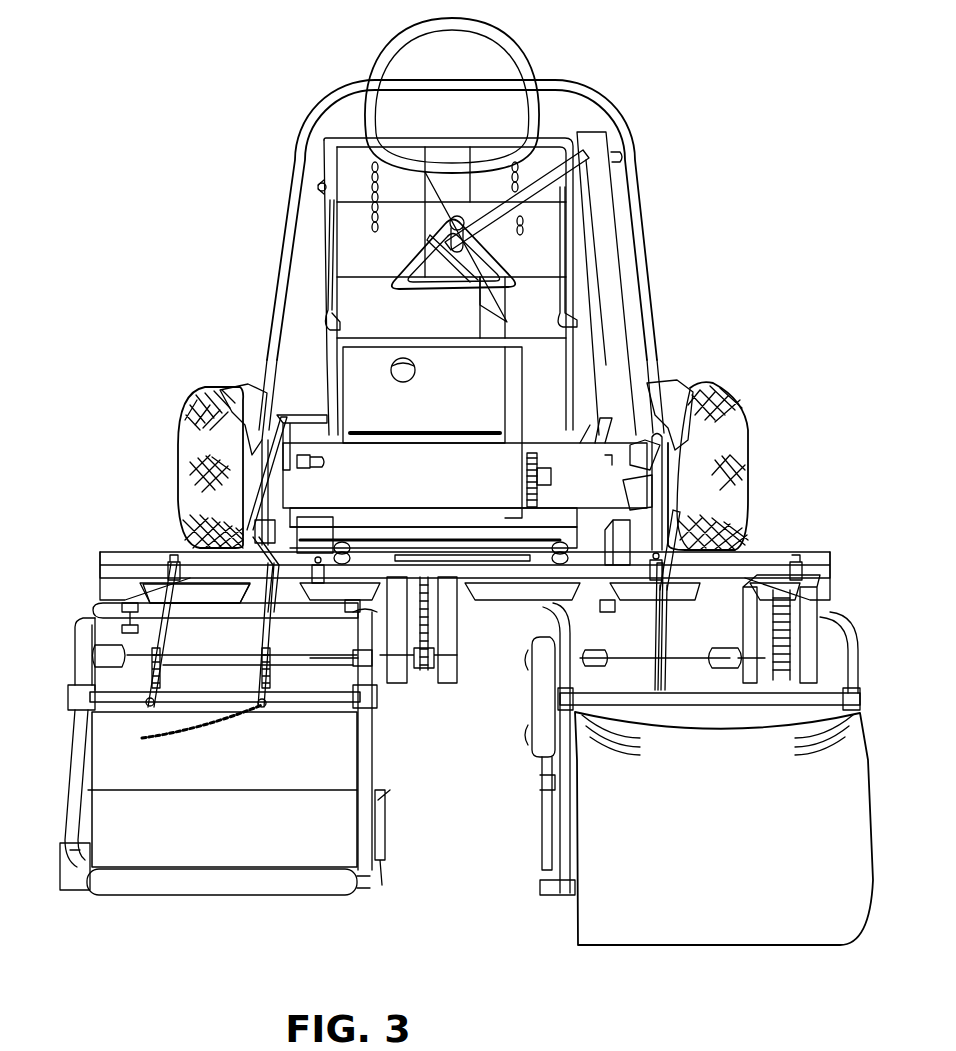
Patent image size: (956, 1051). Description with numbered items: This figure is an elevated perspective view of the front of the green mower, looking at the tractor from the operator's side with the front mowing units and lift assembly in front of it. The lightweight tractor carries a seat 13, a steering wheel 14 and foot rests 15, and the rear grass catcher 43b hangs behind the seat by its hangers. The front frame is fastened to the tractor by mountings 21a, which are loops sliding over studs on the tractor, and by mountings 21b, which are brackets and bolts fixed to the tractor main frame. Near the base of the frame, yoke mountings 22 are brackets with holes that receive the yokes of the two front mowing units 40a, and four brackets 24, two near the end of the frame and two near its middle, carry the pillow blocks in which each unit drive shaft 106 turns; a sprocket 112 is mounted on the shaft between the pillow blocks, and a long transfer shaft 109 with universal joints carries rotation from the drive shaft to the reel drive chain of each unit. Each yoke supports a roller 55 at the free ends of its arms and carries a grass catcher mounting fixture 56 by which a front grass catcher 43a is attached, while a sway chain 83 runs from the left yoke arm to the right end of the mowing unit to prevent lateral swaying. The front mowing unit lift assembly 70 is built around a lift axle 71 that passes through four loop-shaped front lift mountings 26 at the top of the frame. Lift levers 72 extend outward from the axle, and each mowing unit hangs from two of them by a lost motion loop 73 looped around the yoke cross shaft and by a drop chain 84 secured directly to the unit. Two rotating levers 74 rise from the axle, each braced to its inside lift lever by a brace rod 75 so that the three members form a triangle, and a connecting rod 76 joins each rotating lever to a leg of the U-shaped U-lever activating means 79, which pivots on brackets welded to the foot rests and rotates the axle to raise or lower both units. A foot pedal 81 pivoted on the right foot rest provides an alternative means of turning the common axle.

The seat 13 is at (452, 95).
The steering wheel 14 is at (513, 273).
The foot rests 15 is at (471, 485).
The mountings 21a is at (342, 546).
The mountings 21b is at (275, 530).
The yoke mountings 22 is at (122, 603).
The brackets 24 is at (447, 668).
The front lift mountings 26 is at (166, 570).
The front mowing units 40a is at (300, 775).
The front grass catcher 43a is at (706, 774).
The grass catcher 43b is at (400, 328).
The roller 55 is at (213, 886).
The grass catcher mounting fixture 56 is at (540, 755).
The front mowing unit lift assembly 70 is at (240, 367).
The lift axle 71 is at (490, 572).
The lift levers 72 is at (265, 628).
The lost motion loop 73 is at (148, 706).
The rotating levers 74 is at (247, 528).
The brace rod 75 is at (258, 563).
The connecting rod 76 is at (262, 470).
The U-lever activating means 79 is at (535, 92).
The foot pedal 81 is at (300, 412).
The sway chain 83 is at (176, 742).
The drop chain 84 is at (162, 668).
The unit drive shaft 106 is at (432, 655).
The transfer shaft 109 is at (698, 660).
The sprocket 112 is at (420, 650).